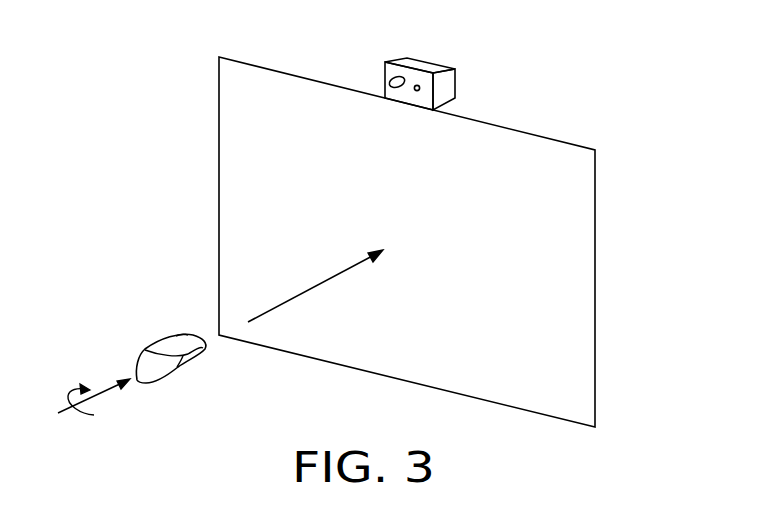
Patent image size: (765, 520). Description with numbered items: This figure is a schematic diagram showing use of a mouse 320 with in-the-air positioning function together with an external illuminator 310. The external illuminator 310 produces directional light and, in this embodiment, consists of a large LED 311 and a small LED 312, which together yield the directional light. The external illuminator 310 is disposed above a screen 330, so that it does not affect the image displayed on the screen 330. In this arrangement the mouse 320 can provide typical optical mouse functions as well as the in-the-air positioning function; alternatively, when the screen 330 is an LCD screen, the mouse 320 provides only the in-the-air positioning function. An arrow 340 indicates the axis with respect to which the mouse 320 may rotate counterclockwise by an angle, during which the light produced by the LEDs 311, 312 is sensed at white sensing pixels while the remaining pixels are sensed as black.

The external illuminator 310 is at (384, 67).
The large LED 311 is at (401, 78).
The small LED 312 is at (420, 88).
The mouse with in-the-air positioning function 320 is at (138, 354).
The screen 330 is at (595, 218).
The arrow 340 is at (293, 298).